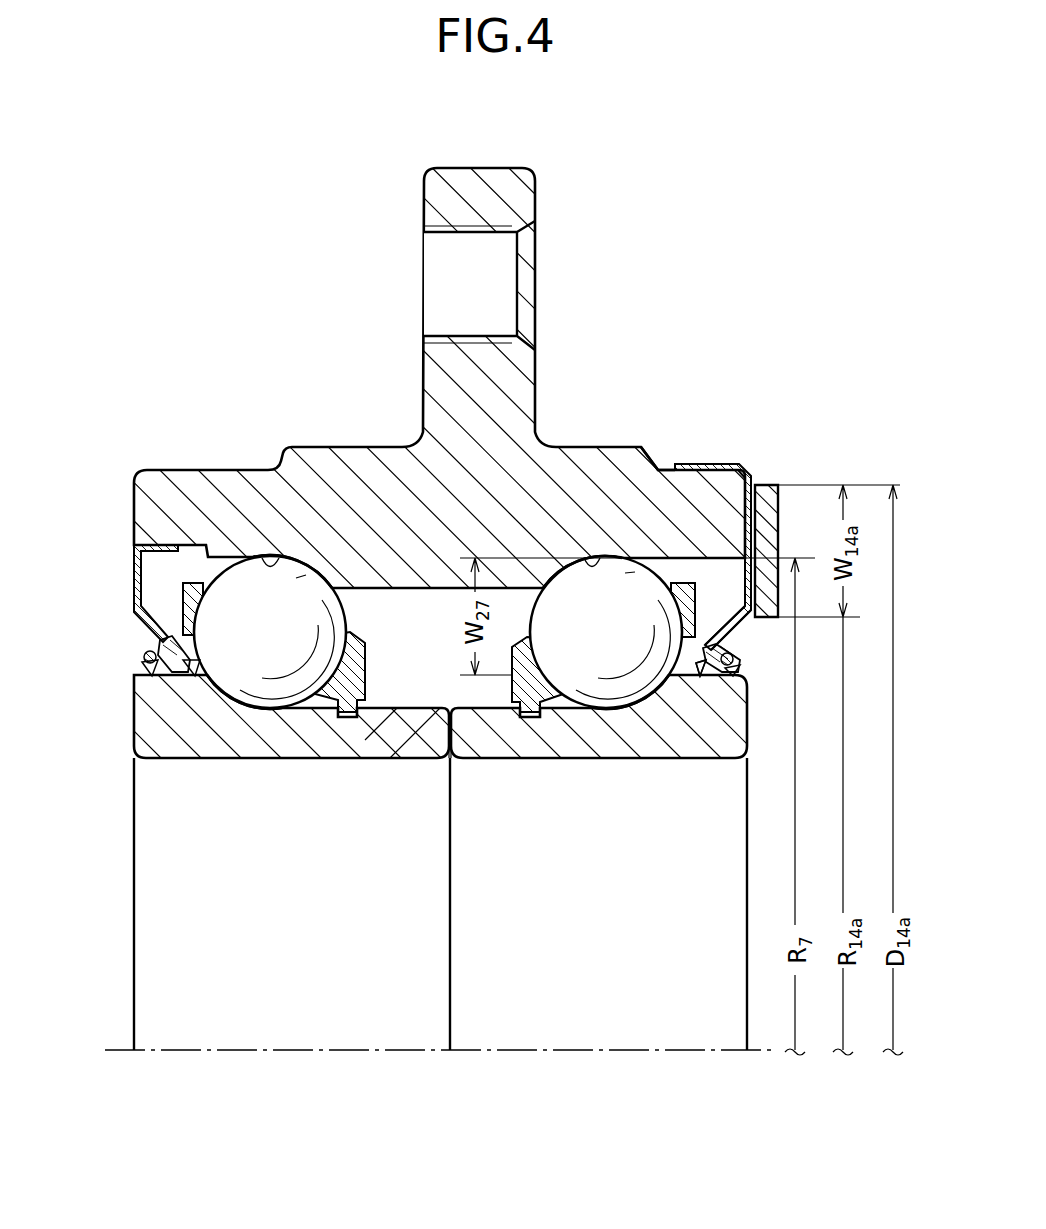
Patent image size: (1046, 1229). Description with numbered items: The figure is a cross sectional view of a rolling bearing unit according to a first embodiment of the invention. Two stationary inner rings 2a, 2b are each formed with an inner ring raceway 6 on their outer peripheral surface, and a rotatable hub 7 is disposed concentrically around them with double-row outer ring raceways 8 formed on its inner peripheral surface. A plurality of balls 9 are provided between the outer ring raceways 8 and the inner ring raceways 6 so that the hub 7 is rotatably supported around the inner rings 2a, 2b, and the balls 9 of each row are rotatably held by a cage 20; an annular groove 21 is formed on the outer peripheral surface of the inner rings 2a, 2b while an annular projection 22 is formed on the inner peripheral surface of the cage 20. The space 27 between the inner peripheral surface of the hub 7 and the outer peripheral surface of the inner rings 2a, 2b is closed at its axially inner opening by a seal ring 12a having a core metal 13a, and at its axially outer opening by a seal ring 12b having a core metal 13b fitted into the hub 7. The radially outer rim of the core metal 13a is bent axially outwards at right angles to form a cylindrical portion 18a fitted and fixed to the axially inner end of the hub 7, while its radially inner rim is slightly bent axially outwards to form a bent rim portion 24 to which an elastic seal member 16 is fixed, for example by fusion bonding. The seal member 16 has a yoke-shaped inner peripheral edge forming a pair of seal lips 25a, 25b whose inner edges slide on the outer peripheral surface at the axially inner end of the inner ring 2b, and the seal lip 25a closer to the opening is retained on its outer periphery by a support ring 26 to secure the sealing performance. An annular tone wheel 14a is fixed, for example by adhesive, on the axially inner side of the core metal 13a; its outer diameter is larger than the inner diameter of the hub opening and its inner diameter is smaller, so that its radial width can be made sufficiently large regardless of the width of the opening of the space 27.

The hub 7 is at (345, 470).
The outer ring raceways 8 is at (270, 560).
The balls 9 is at (291, 578).
The inner ring raceways 6 is at (230, 683).
The inner ring 2a is at (257, 750).
The inner ring 2b is at (577, 750).
The cage 20 is at (383, 758).
The annular groove 21 is at (338, 716).
The annular projection 22 is at (350, 692).
The seal ring 12a is at (741, 468).
The seal ring 12b is at (135, 568).
The core metal 13a is at (762, 480).
The core metal 13b is at (135, 602).
The tone wheel 14a is at (781, 486).
The cylindrical portion 18a is at (716, 466).
The space 27 is at (683, 572).
The bent rim portion 24 is at (702, 638).
The seal lip 25a is at (730, 662).
The seal lip 25b is at (700, 652).
The seal member 16 is at (726, 670).
The support ring 26 is at (735, 655).